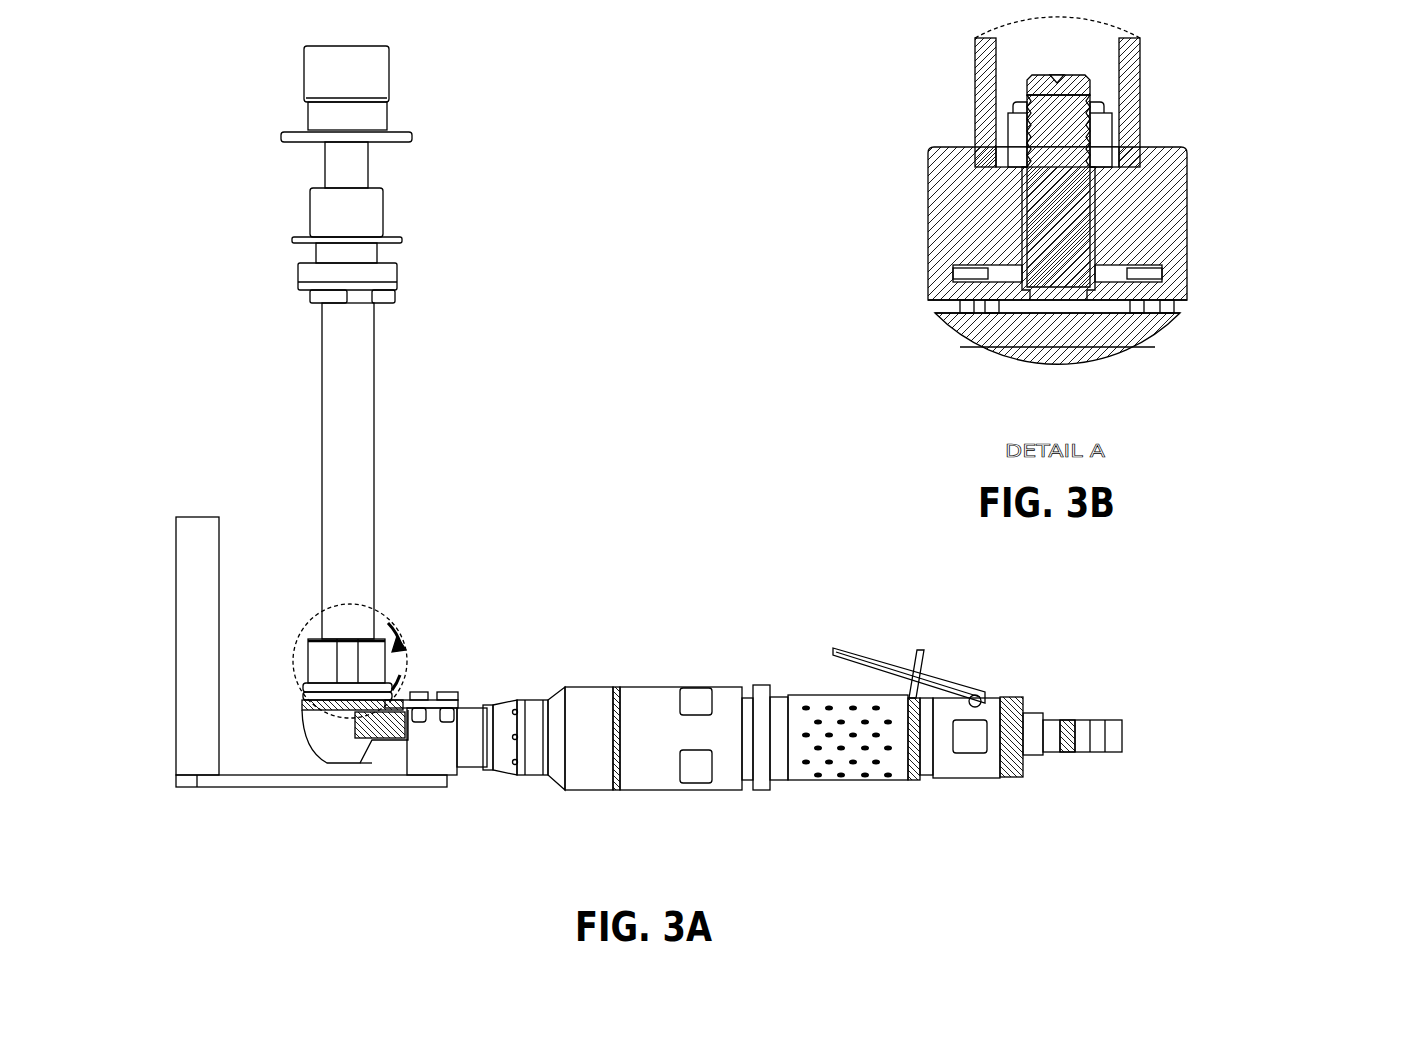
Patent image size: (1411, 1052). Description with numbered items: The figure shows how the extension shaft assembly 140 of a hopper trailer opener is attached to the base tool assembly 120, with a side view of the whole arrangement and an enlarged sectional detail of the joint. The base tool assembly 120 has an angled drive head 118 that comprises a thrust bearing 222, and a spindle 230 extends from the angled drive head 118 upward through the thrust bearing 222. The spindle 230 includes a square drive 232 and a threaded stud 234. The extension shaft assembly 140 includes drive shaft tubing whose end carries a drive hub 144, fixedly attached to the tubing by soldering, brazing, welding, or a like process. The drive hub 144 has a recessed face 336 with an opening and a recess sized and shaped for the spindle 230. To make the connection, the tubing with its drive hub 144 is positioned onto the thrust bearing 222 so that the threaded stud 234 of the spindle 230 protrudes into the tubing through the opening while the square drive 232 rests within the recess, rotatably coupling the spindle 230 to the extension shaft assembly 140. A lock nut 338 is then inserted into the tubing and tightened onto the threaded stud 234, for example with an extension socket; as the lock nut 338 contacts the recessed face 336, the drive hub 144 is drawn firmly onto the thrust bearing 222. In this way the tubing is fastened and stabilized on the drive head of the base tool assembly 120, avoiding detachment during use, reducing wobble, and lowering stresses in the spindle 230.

In FIG. 3A, the base tool assembly 120 is at (643, 812).
In FIG. 3A, the extension shaft assembly 140 is at (264, 367).
In FIG. 3B, the angled drive head 118 is at (1001, 333).
In FIG. 3B, the drive hub 144 is at (1152, 229).
In FIG. 3B, the thrust bearing 222 is at (925, 303).
In FIG. 3B, the spindle 230 is at (1094, 86).
In FIG. 3B, the square drive 232 is at (1033, 243).
In FIG. 3B, the threaded stud 234 is at (1028, 132).
In FIG. 3B, the recessed face 336 is at (1140, 162).
In FIG. 3B, the lock nut 338 is at (1107, 132).